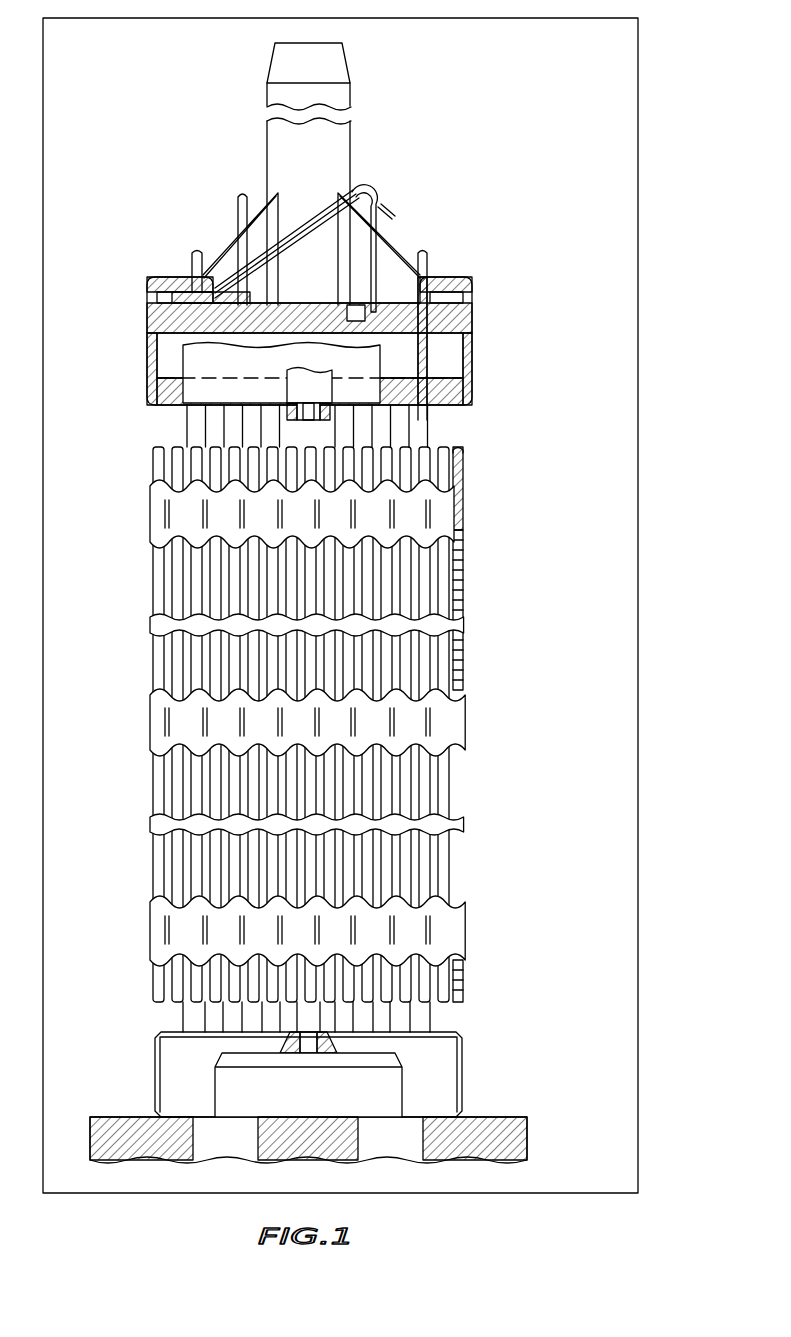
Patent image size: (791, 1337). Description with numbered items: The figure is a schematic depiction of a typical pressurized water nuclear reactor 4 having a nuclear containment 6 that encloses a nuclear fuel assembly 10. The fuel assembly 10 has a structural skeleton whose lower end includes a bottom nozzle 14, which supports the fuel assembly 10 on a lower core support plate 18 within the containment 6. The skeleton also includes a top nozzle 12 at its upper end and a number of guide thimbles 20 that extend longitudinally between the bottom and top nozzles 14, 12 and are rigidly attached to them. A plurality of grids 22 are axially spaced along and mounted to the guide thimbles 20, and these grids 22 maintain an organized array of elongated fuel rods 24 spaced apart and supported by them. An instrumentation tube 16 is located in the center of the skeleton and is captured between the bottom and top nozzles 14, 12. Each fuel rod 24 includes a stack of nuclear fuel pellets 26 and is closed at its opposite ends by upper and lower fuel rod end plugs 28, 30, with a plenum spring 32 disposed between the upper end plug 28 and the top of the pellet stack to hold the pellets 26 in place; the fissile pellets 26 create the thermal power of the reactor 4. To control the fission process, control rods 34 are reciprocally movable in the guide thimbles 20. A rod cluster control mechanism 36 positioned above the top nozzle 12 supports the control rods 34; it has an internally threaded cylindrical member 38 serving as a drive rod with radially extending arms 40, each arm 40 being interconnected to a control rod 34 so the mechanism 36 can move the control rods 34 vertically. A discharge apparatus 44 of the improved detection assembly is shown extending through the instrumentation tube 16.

The pressurized water nuclear reactor 4 is at (366, 605).
The nuclear containment 6 is at (638, 405).
The nuclear fuel assembly 10 is at (346, 580).
The top nozzle 12 is at (344, 333).
The bottom nozzle 14 is at (482, 1056).
The instrumentation tube 16 is at (300, 1048).
The lower core support plate 18 is at (520, 1117).
The guide thimbles 20 is at (187, 420).
The grids 22 is at (153, 514).
The fuel rods 24 is at (156, 650).
The nuclear fuel pellets 26 is at (462, 562).
The upper fuel rod end plug 28 is at (463, 450).
The lower fuel rod end plug 30 is at (464, 1000).
The plenum spring 32 is at (465, 503).
The control rods 34 is at (463, 373).
The rod cluster control mechanism 36 is at (385, 183).
The internally threaded cylindrical member 38 is at (352, 120).
The arms 40 is at (262, 194).
The discharge apparatus 44 is at (298, 396).